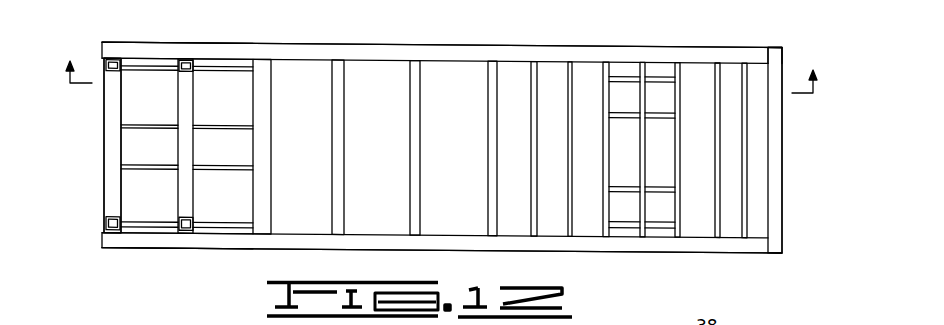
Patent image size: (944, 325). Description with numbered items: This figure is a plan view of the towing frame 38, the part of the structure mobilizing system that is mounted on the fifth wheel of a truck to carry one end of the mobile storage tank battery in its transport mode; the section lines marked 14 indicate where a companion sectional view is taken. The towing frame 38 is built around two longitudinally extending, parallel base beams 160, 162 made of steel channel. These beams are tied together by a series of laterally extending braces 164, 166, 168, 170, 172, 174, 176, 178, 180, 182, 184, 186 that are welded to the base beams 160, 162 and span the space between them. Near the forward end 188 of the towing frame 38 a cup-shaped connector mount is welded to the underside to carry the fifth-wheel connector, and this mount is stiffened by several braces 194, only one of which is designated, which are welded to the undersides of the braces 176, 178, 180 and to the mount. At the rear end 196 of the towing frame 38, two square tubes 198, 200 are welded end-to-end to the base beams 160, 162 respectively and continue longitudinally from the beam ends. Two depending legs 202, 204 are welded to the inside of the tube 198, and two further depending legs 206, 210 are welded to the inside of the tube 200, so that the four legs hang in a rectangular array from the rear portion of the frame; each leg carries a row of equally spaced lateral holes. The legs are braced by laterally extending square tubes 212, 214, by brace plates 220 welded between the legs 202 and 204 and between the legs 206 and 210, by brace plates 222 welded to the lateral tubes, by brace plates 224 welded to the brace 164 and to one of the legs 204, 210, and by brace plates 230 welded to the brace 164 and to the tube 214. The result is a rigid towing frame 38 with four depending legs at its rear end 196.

The section line 14- 14 is at (444, 65).
The towing frame 38 is at (476, 40).
The base beam 160 is at (321, 50).
The base beam 162 is at (571, 243).
The brace 164 is at (268, 147).
The brace 166 is at (341, 123).
The brace 168 is at (418, 117).
The brace 170 is at (490, 147).
The brace 172 is at (545, 74).
The brace 174 is at (568, 103).
The brace 176 is at (605, 71).
The brace 178 is at (640, 74).
The brace 180 is at (685, 75).
The brace 182 is at (716, 90).
The brace 184 is at (746, 76).
The brace 186 is at (777, 62).
The forward end 188 is at (783, 137).
The brace 194 is at (658, 227).
The rear end 196 is at (104, 107).
The square tube 198 is at (153, 55).
The square tube 200 is at (218, 243).
The depending leg 202 is at (102, 60).
The depending leg 204 is at (186, 45).
The depending leg 206 is at (104, 223).
The depending leg 210 is at (186, 233).
The square tube 212 is at (108, 187).
The square tube 214 is at (186, 103).
The brace plate 220 is at (141, 65).
The brace plate 222 is at (162, 123).
The brace plate 224 is at (238, 60).
The brace plate 230 is at (240, 123).